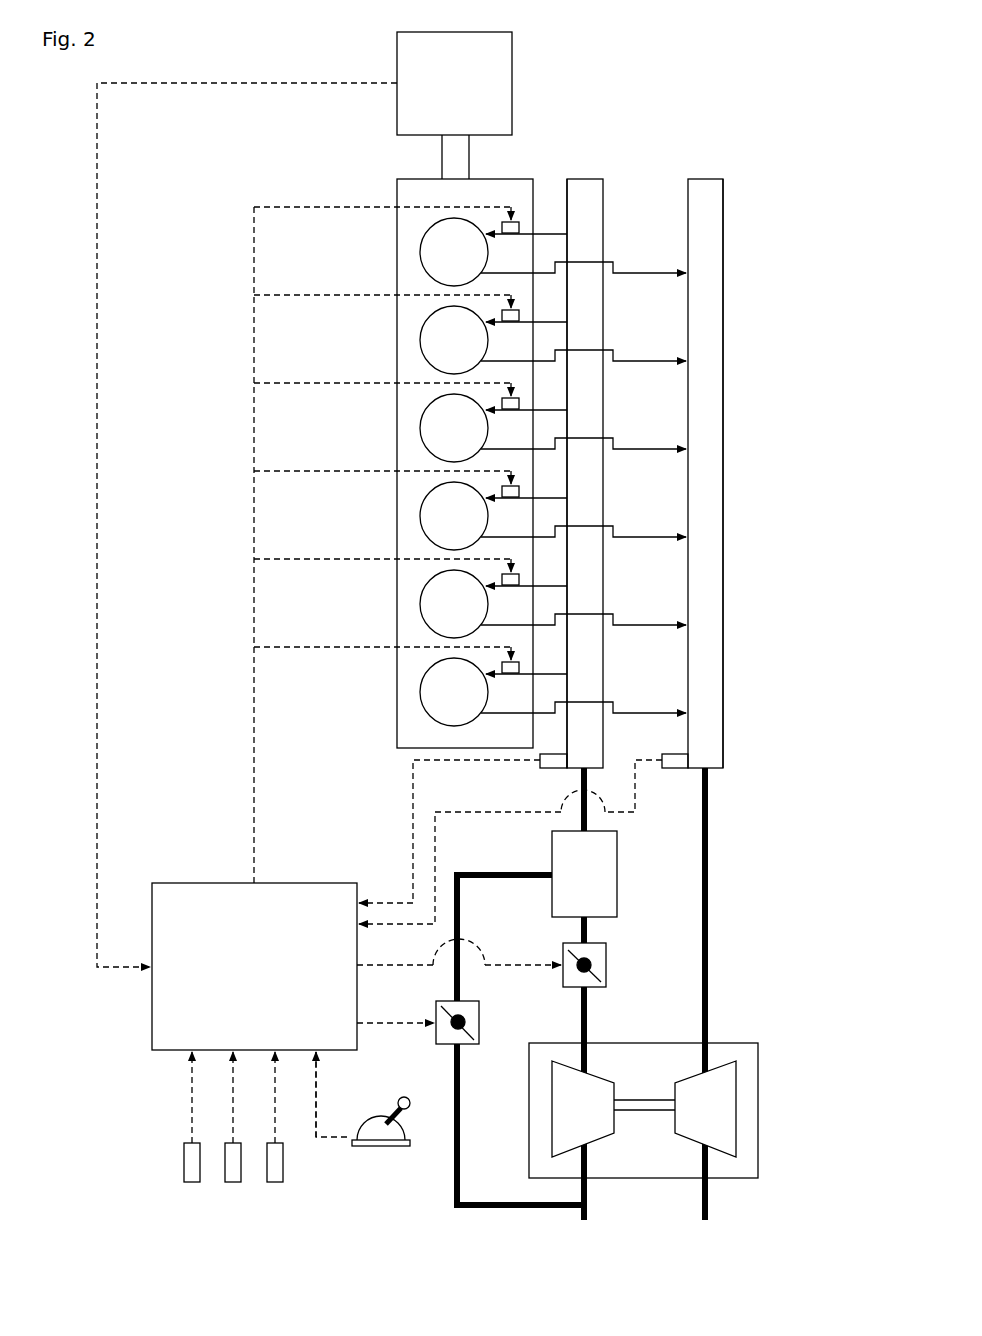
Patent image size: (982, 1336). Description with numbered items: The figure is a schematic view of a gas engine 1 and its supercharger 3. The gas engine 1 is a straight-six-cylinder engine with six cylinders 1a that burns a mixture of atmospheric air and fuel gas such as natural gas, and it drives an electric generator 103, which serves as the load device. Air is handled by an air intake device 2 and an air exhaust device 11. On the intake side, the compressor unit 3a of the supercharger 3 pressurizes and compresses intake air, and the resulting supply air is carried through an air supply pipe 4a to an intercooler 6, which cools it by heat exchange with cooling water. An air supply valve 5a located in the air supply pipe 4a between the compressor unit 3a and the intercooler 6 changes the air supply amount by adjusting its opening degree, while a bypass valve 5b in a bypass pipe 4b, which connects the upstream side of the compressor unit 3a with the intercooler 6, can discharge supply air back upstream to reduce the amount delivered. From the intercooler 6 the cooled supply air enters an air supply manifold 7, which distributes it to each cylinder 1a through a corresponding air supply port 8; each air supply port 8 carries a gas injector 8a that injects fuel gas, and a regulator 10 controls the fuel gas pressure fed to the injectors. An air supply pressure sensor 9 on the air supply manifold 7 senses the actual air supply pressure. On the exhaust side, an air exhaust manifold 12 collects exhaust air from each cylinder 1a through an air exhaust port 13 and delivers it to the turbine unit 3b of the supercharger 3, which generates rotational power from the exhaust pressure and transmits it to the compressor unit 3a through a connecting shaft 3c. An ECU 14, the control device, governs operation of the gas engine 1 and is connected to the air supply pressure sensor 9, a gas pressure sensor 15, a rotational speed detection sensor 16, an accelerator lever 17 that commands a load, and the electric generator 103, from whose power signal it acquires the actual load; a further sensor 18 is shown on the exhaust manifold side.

The gas engine 1 is at (595, 400).
The cylinder 1a is at (464, 272).
The air intake device 2 is at (585, 165).
The supercharger 3 is at (783, 1101).
The compressor unit 3a is at (555, 1112).
The turbine unit 3b is at (725, 1143).
The connecting shaft 3c is at (646, 1112).
The air supply pipe 4a is at (587, 1013).
The bypass pipe 4b is at (461, 1066).
The air supply valve 5a is at (606, 965).
The bypass valve 5b is at (479, 1008).
The intercooler 6 is at (552, 842).
The air supply manifold 7 is at (603, 212).
The air supply port 8 is at (546, 232).
The gas injector 8a is at (512, 233).
The air supply pressure sensor 9 is at (540, 762).
The regulator 10 is at (192, 1182).
The air exhaust device 11 is at (710, 165).
The air exhaust manifold 12 is at (723, 432).
The air exhaust port 13 is at (646, 270).
The ECU 14 is at (266, 982).
The gas pressure sensor 15 is at (233, 1182).
The rotational speed detection sensor 16 is at (275, 1182).
The accelerator lever 17 is at (380, 1148).
The exhaust sensor 18 is at (672, 770).
The electric generator 103 is at (465, 100).